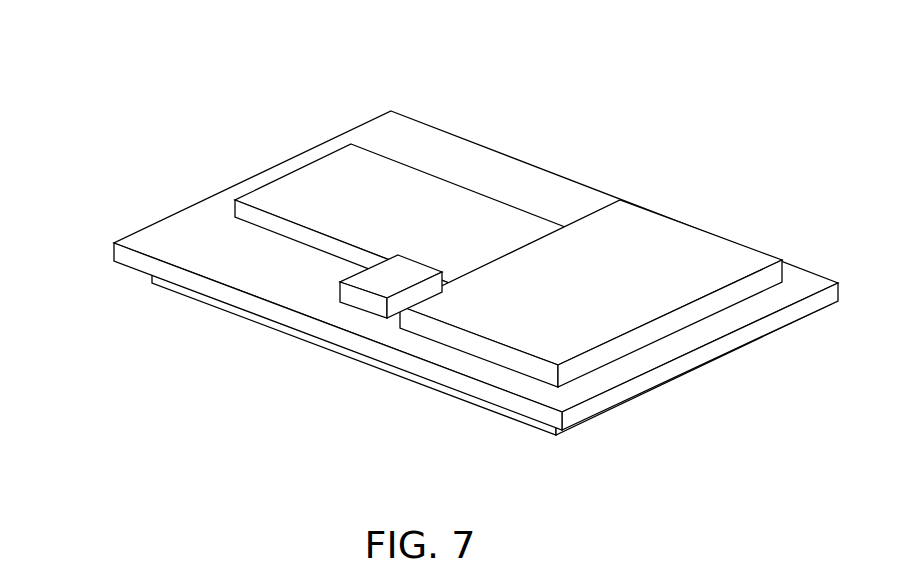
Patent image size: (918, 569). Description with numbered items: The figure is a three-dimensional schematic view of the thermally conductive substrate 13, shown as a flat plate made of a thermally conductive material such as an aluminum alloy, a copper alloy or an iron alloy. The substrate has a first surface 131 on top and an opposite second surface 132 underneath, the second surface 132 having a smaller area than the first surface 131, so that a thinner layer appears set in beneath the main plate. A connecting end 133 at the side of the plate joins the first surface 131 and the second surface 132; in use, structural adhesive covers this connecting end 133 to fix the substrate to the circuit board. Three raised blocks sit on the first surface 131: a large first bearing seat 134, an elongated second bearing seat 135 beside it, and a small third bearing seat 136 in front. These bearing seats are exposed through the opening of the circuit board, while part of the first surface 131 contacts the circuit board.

The thermally conductive substrate 13 is at (58, 31).
The first surface 131 is at (176, 224).
The second surface 132 is at (216, 315).
The connecting end 133 is at (138, 268).
The first bearing seat 134 is at (693, 232).
The second bearing seat 135 is at (313, 187).
The third bearing seat 136 is at (365, 302).